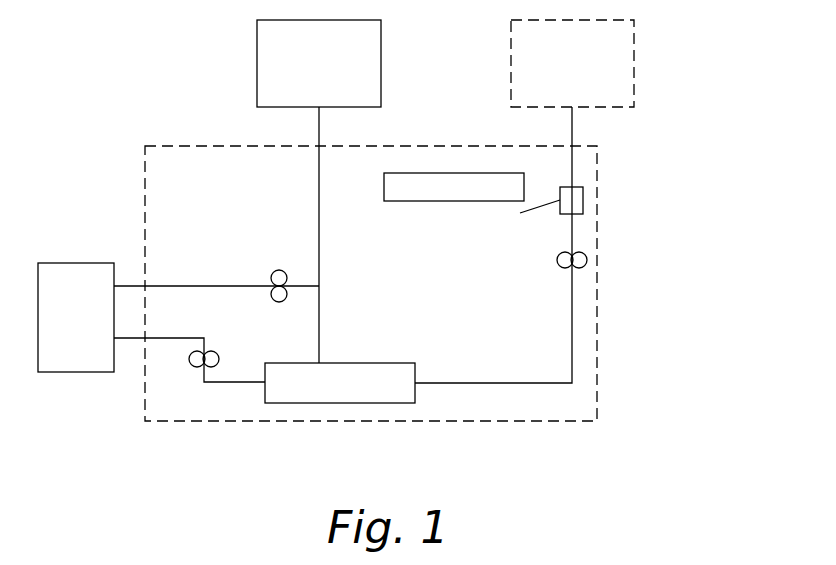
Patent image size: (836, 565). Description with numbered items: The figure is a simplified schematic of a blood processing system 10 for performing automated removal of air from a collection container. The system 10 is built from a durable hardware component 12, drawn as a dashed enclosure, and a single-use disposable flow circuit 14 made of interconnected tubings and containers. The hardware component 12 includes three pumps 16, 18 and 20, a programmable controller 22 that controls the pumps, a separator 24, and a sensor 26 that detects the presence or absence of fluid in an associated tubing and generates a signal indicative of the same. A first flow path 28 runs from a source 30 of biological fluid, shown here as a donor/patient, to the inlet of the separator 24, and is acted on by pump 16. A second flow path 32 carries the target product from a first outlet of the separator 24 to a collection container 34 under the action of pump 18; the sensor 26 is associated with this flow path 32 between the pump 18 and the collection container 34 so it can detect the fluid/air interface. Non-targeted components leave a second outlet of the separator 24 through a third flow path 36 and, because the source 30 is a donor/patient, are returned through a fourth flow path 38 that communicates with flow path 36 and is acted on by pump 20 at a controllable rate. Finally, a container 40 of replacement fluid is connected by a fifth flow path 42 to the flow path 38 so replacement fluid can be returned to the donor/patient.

The blood processing system 10 is at (686, 216).
The durable hardware component 12 is at (184, 146).
The single-use disposable flow circuit 14 is at (644, 92).
The pump 16 is at (211, 349).
The pump 18 is at (557, 261).
The pump 20 is at (279, 270).
The programmable controller 22 is at (428, 201).
The separator 24 is at (404, 363).
The sensor 26 is at (583, 195).
The first flow path 28 is at (158, 340).
The source of biological fluid 30 is at (62, 263).
The second flow path 32 is at (572, 126).
The collection container 34 is at (634, 29).
The third flow path 36 is at (320, 310).
The fourth flow path 38 is at (186, 285).
The container of replacement fluid 40 is at (381, 51).
The fifth flow path 42 is at (319, 222).